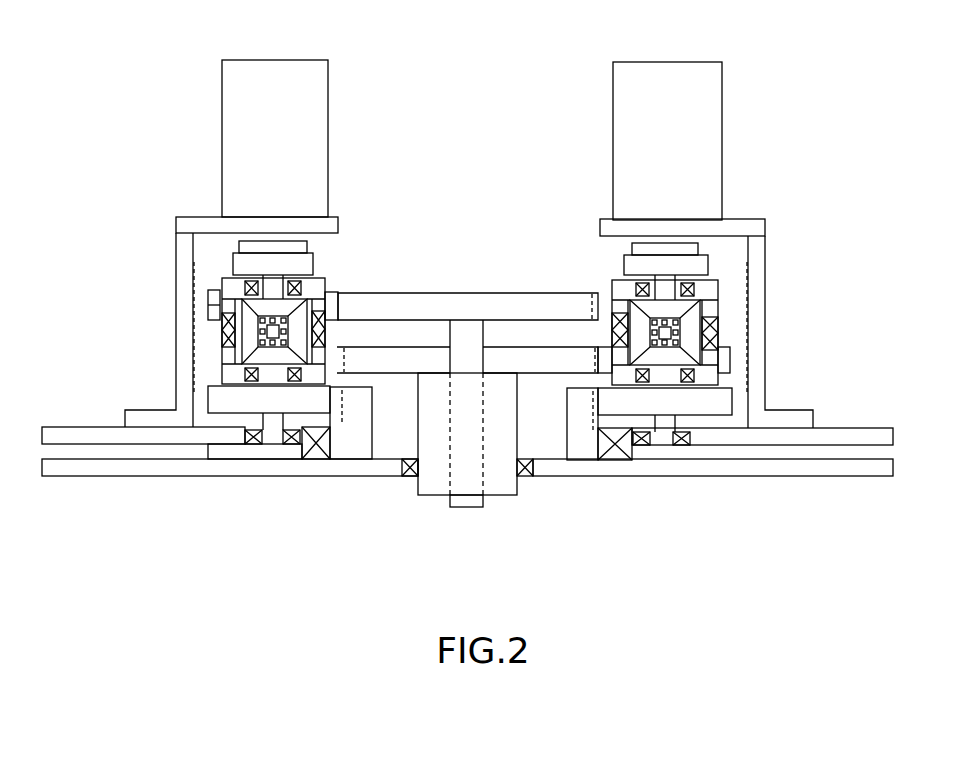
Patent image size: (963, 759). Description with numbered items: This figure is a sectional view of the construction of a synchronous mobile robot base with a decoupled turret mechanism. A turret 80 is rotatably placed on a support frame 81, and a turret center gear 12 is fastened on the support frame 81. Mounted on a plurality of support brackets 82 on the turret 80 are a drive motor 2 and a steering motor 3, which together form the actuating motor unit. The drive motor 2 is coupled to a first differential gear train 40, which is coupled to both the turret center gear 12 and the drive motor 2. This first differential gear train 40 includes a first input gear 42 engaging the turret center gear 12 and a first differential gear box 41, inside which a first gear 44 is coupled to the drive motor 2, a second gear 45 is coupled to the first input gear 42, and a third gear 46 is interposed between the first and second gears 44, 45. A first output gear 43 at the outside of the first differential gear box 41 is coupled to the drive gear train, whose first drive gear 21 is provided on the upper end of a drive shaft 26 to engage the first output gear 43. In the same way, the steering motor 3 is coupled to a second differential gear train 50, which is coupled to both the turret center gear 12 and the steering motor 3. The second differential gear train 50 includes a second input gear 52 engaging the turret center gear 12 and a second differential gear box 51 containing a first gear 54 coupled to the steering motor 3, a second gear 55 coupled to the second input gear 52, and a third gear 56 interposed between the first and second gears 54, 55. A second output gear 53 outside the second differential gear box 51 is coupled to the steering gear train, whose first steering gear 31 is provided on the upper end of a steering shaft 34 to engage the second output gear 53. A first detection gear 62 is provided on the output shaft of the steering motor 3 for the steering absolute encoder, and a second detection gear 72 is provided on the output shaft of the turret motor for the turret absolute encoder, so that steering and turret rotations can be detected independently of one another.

The drive motor 2 is at (672, 80).
The steering motor 3 is at (269, 76).
The turret center gear 12 is at (587, 440).
The first drive gear 21 is at (530, 360).
The drive shaft 26 is at (505, 472).
The first steering gear 31 is at (410, 306).
The steering shaft 34 is at (468, 330).
The first differential gear train 40 is at (759, 328).
The first differential gear box 41 is at (712, 285).
The first input gear 42 is at (720, 393).
The first output gear 43 is at (722, 367).
The first gear 44 is at (675, 308).
The second gear 45 is at (680, 355).
The third gear 46 is at (690, 327).
The second differential gear train 50 is at (173, 325).
The second differential gear box 51 is at (232, 280).
The second input gear 52 is at (212, 391).
The second output gear 53 is at (225, 305).
The first gear 54 is at (267, 305).
The second gear 55 is at (268, 353).
The third gear 56 is at (250, 331).
The first detection gear 62 is at (303, 260).
The second detection gear 72 is at (638, 263).
The turret 80 is at (212, 440).
The support frame 81 is at (800, 470).
The support brackets 82 is at (187, 228).